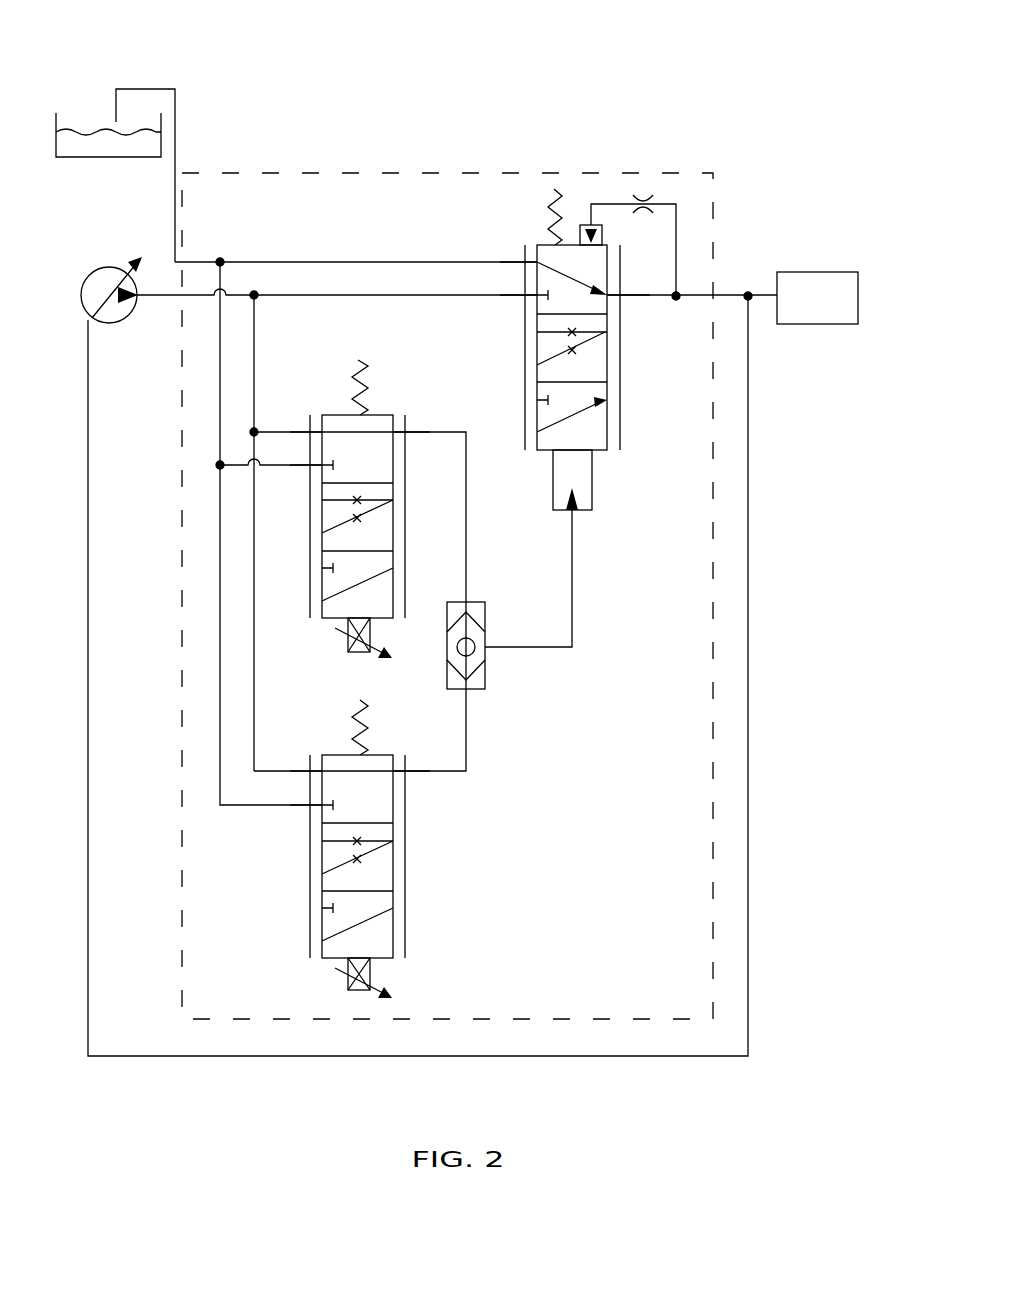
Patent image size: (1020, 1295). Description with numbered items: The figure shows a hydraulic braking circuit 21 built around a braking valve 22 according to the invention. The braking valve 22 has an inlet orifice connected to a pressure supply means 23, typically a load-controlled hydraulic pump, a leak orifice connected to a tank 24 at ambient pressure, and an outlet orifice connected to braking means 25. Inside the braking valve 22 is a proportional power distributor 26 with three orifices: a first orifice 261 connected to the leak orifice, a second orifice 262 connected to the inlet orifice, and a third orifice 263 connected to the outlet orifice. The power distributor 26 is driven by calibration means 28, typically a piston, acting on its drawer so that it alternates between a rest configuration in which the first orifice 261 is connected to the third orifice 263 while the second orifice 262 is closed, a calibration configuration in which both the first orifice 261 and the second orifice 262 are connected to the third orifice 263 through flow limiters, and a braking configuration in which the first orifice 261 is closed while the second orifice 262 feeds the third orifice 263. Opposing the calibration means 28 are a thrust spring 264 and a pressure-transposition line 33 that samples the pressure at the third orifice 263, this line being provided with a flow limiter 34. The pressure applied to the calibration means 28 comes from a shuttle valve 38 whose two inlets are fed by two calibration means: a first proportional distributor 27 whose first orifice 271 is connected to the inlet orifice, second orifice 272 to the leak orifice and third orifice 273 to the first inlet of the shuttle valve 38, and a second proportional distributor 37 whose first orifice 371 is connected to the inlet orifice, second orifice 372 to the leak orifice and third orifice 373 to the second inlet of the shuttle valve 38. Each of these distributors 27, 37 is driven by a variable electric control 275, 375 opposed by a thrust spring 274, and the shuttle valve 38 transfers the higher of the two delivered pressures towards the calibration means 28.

The hydraulic braking circuit 21 is at (368, 104).
The braking valve 22 is at (520, 173).
The pressure supply means 23 is at (113, 323).
The tank 24 is at (82, 132).
The braking means 25 is at (827, 272).
The proportional power distributor 26 is at (620, 390).
The first orifice 261 is at (525, 262).
The second orifice 262 is at (525, 295).
The third orifice 263 is at (620, 295).
The thrust spring 264 is at (554, 189).
The first proportional distributor 27 is at (390, 620).
The first orifice 271 is at (310, 432).
The second orifice 272 is at (310, 470).
The third orifice 273 is at (395, 432).
The thrust spring 274 is at (358, 360).
The variable electric control 275 is at (355, 654).
The calibration means 28 is at (592, 480).
The pressure-transposition line 33 is at (672, 203).
The flow limiter 34 is at (645, 196).
The second proportional distributor 37 is at (390, 962).
The first orifice 371 is at (310, 771).
The second orifice 372 is at (310, 810).
The third orifice 373 is at (408, 772).
The variable electric control 375 is at (355, 992).
The shuttle valve 38 is at (485, 683).